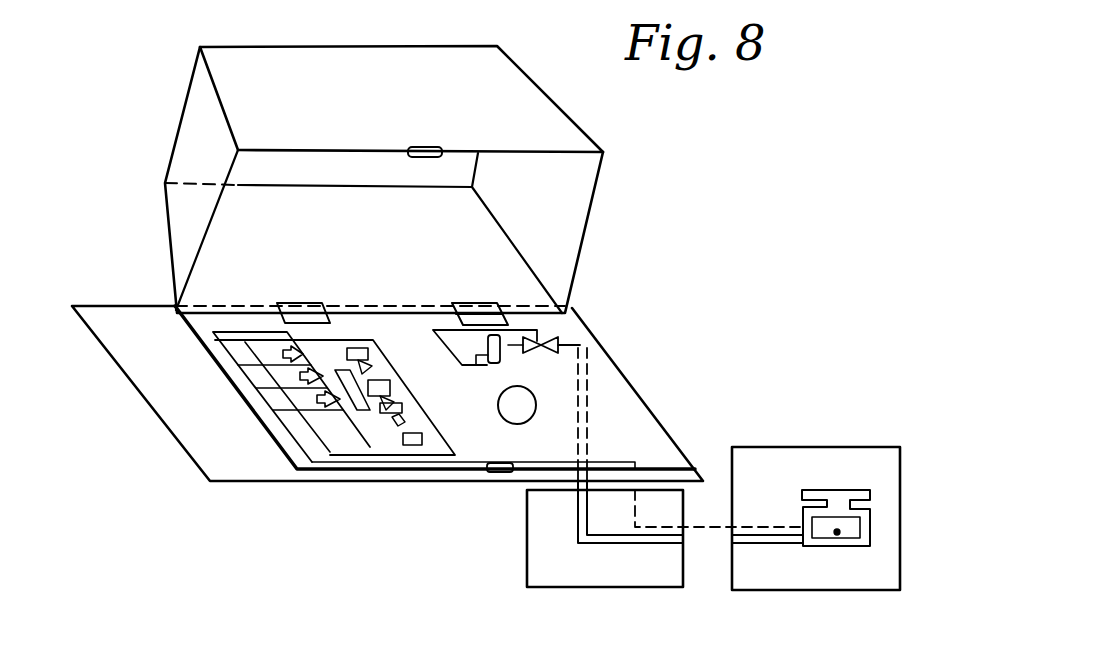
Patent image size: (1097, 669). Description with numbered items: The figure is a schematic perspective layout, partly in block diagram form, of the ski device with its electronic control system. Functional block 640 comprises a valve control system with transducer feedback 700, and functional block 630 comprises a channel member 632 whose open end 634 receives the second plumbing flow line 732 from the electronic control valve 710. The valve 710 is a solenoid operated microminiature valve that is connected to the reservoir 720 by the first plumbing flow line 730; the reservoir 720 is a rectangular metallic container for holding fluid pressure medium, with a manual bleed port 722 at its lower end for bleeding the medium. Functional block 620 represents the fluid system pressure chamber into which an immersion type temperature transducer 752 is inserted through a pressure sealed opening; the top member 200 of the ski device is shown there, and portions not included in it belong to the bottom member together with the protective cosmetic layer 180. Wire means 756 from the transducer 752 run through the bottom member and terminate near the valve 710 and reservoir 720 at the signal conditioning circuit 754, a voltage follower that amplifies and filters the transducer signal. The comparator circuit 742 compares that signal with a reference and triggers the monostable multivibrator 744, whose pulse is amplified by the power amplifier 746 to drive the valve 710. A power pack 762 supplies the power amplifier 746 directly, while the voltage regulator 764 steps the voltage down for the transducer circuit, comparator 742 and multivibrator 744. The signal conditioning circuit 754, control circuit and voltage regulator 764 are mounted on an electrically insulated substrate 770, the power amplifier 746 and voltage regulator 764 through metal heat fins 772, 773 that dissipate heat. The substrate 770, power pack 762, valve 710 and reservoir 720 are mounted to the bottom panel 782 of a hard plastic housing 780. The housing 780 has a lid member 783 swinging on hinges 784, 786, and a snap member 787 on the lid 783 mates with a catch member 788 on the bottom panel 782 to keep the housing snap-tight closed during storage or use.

The valve control system with transducer feedback 700 is at (773, 128).
The housing 780 is at (615, 172).
The lid member 783 is at (543, 103).
The snap member 787 is at (432, 146).
The functional block 640 is at (687, 307).
The protective cosmetic layer 180 is at (147, 326).
The bottom panel 782 is at (295, 472).
The catch member 788 is at (495, 478).
The substrate 770 is at (248, 343).
The signal conditioning circuit 754 is at (240, 365).
The monostable multivibrator 744 is at (275, 408).
The comparator circuit 742 is at (262, 387).
The power amplifier 746 is at (350, 368).
The metal heat fin 772 is at (357, 347).
The voltage regulator 764 is at (392, 426).
The metal heat fin 773 is at (425, 440).
The reservoir 720 is at (453, 327).
The manual bleed port 722 is at (476, 366).
The hinge 784 is at (302, 303).
The hinge 786 is at (487, 303).
The electronic control valve 710 is at (537, 344).
The first plumbing flow line 730 is at (506, 345).
The second plumbing flow line 732 is at (572, 343).
The open end 634 is at (580, 346).
The power pack 762 is at (531, 419).
The functional block 630 is at (527, 567).
The channel member 632 is at (577, 517).
The wire means 756 is at (612, 470).
The functional block 620 is at (790, 447).
The top member 200 is at (848, 488).
The immersion type temperature transducer 752 is at (835, 534).